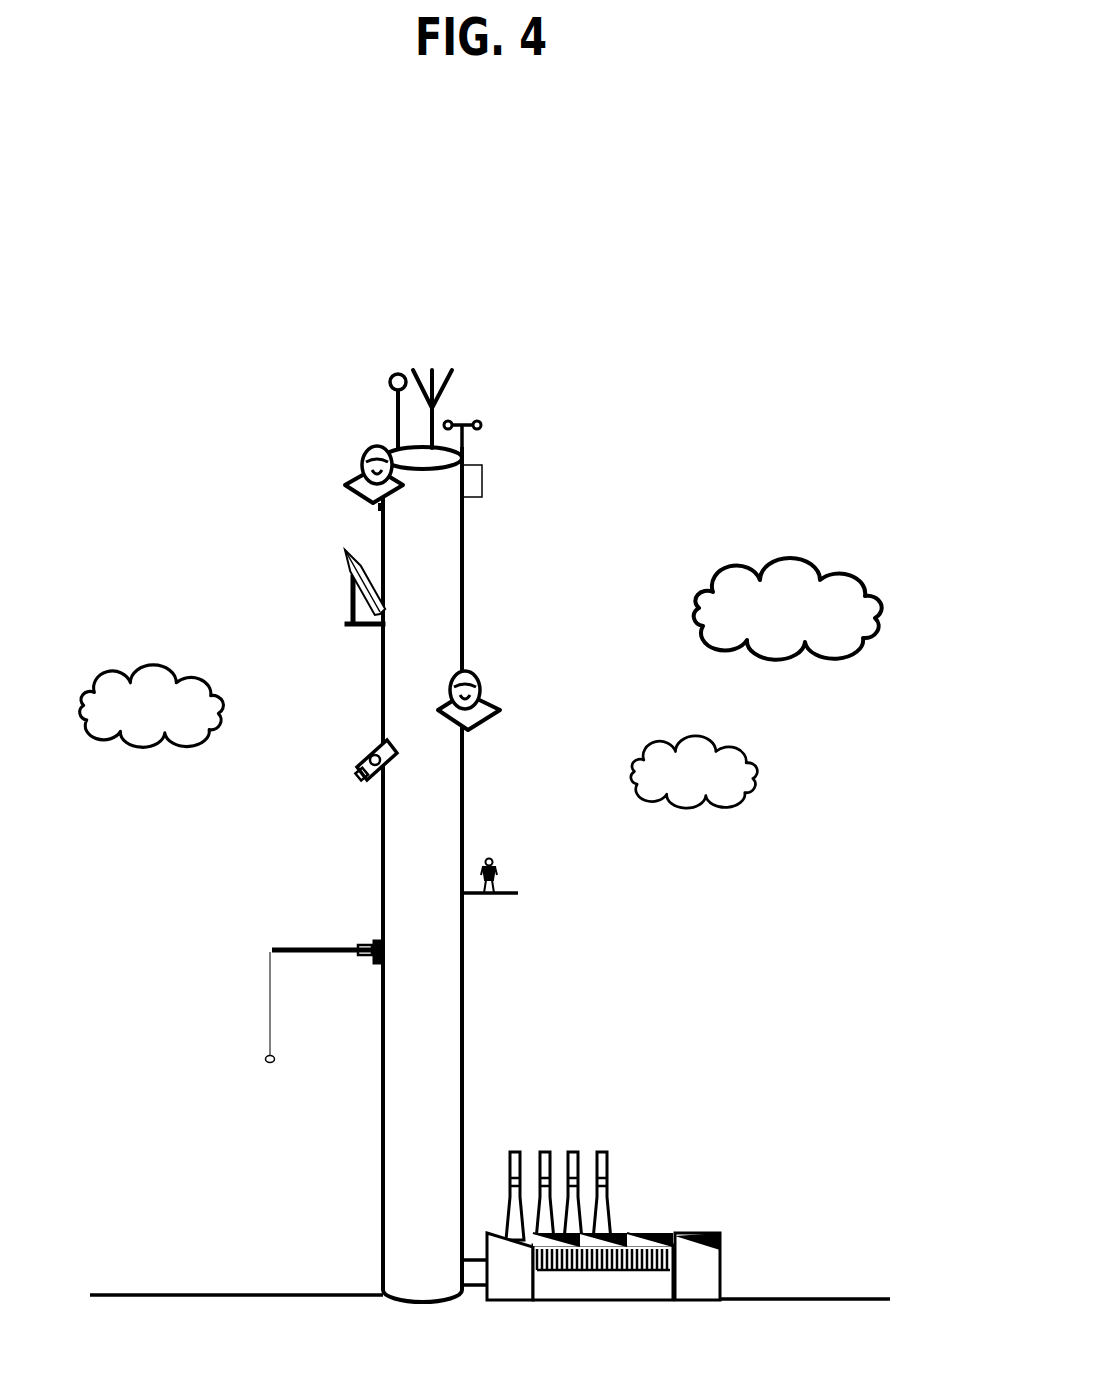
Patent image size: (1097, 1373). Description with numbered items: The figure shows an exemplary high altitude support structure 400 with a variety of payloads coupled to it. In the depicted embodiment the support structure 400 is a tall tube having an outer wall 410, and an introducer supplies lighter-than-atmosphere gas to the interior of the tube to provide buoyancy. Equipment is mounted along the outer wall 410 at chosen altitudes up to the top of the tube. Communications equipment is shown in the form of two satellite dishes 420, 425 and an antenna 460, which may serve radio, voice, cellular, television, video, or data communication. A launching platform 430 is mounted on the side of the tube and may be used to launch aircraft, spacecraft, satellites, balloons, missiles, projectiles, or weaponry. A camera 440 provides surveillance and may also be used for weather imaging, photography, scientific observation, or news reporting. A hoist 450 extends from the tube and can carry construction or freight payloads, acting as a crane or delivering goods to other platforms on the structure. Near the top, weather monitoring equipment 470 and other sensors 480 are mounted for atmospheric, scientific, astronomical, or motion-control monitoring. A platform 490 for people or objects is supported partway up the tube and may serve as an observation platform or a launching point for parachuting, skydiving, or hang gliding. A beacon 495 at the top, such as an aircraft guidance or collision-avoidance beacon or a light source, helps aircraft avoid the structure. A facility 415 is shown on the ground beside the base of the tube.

The support structure 400 is at (752, 485).
The outer wall 410 is at (458, 578).
The power plant / facility 415 is at (693, 1231).
The satellite dish 420 is at (362, 460).
The satellite dish 425 is at (477, 686).
The launching platform 430 is at (345, 628).
The camera 440 is at (367, 750).
The hoist 450 is at (270, 950).
The antenna 460 is at (447, 398).
The weather monitoring equipment 470 is at (467, 443).
The sensors 480 is at (480, 483).
The platform 490 is at (490, 895).
The beacon 495 is at (397, 408).